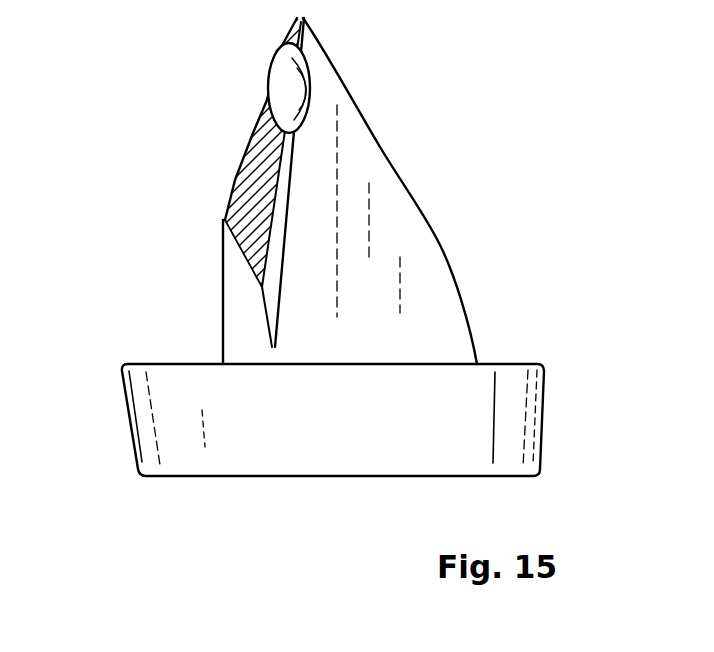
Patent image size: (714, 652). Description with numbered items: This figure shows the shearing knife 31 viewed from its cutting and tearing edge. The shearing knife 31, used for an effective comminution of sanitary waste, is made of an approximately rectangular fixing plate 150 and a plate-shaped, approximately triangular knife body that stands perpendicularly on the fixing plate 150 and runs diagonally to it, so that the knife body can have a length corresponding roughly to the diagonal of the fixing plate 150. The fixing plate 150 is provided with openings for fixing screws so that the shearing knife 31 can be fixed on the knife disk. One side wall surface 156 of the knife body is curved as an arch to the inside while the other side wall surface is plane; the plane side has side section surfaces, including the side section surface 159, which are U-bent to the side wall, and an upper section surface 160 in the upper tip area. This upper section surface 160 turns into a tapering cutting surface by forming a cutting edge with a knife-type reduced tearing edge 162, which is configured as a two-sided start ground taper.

The shearing knife 31 is at (462, 208).
The fixing plate 150 is at (213, 457).
The side wall surface 156 is at (362, 162).
The side section surface 159 is at (235, 318).
The upper section surface 160 is at (242, 182).
The reduced tearing edge 162 is at (278, 86).